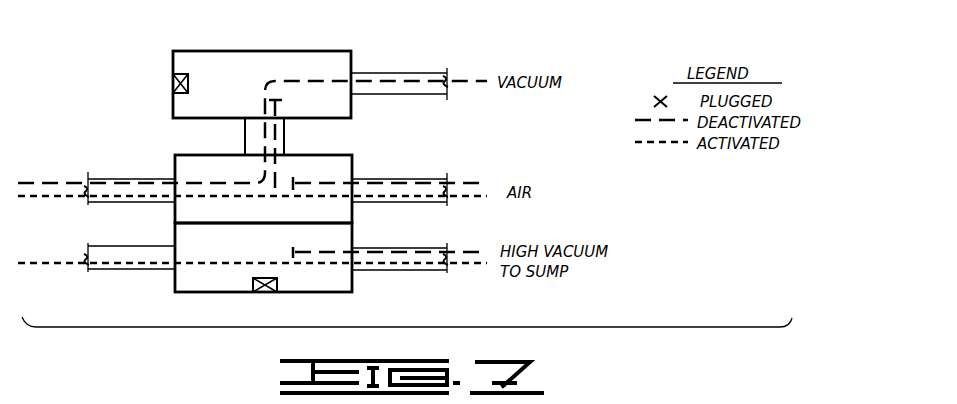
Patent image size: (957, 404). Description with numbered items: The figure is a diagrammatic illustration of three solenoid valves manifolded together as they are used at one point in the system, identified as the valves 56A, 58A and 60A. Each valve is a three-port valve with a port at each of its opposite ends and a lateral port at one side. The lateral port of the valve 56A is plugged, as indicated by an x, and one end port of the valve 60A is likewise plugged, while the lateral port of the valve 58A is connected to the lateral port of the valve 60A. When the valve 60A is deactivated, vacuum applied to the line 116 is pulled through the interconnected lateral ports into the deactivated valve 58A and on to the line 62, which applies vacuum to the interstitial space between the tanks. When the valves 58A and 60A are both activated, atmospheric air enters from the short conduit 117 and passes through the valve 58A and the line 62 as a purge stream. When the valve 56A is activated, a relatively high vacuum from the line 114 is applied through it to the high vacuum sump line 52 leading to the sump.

The solenoid valve 60A is at (212, 58).
The solenoid valve 58A is at (181, 163).
The solenoid valve 56A is at (192, 280).
The line 116 is at (388, 70).
The short conduit 117 is at (388, 178).
The line 114 is at (388, 270).
The line 62 is at (118, 203).
The high vacuum sump line 52 is at (113, 270).